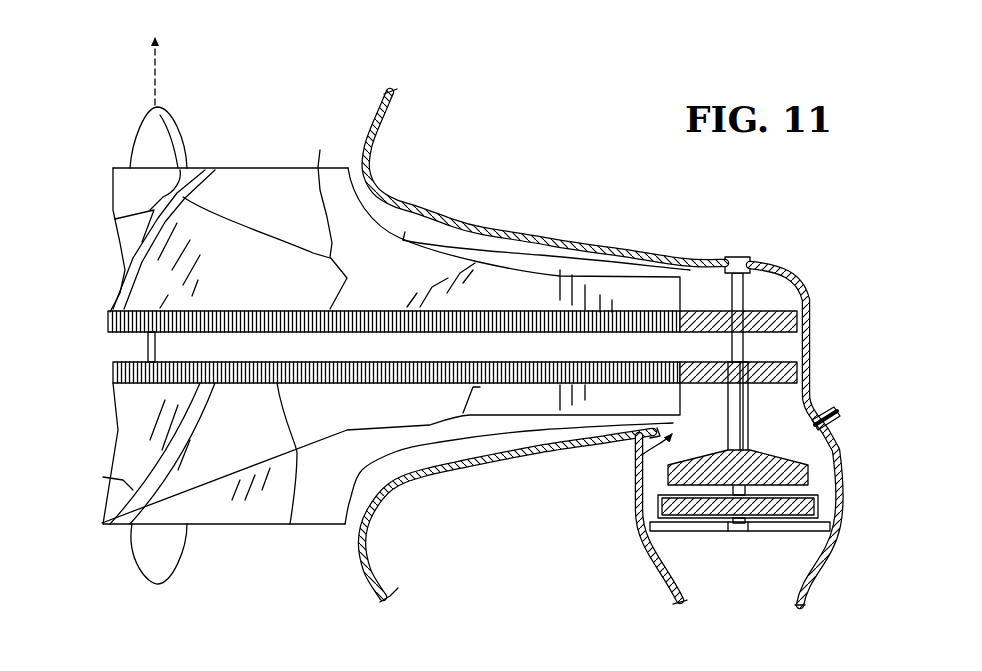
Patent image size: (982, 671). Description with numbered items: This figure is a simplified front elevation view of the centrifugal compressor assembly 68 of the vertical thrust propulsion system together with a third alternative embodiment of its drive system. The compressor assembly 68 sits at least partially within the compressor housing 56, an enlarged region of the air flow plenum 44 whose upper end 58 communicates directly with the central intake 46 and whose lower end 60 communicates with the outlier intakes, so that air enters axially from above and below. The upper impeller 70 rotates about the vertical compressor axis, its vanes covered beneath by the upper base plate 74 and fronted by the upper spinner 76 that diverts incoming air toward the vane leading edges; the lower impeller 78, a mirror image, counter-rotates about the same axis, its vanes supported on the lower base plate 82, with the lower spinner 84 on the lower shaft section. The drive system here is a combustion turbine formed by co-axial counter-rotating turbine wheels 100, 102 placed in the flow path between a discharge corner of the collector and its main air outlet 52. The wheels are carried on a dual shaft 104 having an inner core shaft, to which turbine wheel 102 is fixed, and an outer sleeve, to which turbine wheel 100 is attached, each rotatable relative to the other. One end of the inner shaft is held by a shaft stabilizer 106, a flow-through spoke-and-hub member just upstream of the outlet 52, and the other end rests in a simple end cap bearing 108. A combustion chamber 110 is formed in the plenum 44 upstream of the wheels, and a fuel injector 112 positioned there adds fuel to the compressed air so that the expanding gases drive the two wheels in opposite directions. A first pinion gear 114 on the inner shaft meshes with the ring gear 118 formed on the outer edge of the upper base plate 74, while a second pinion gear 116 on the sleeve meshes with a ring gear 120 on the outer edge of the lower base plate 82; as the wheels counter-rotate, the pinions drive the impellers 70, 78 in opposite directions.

The air flow plenum 44 is at (636, 345).
The central intake 46 is at (391, 88).
The main air outlet 52 is at (800, 607).
The compressor housing 56 is at (511, 515).
The upper end 58 is at (372, 148).
The lower end 60 is at (372, 525).
The centrifugal compressor assembly 68 is at (270, 163).
The upper impeller 70 is at (318, 167).
The upper base plate 74 is at (359, 278).
The upper spinner 76 is at (138, 135).
The lower impeller 78 is at (295, 526).
The lower base plate 82 is at (354, 389).
The lower spinner 84 is at (134, 545).
The turbine wheel 100 is at (741, 520).
The turbine wheel 102 is at (822, 496).
The dual shaft 104 is at (745, 344).
The shaft stabilizer 106 is at (765, 535).
The end cap bearing 108 is at (748, 266).
The combustion chamber 110 is at (642, 456).
The fuel injector 112 is at (840, 418).
The first pinion gear 114 is at (800, 321).
The second pinion gear 116 is at (800, 367).
The ring gear 118 is at (623, 322).
The lower striped section 120 is at (555, 372).